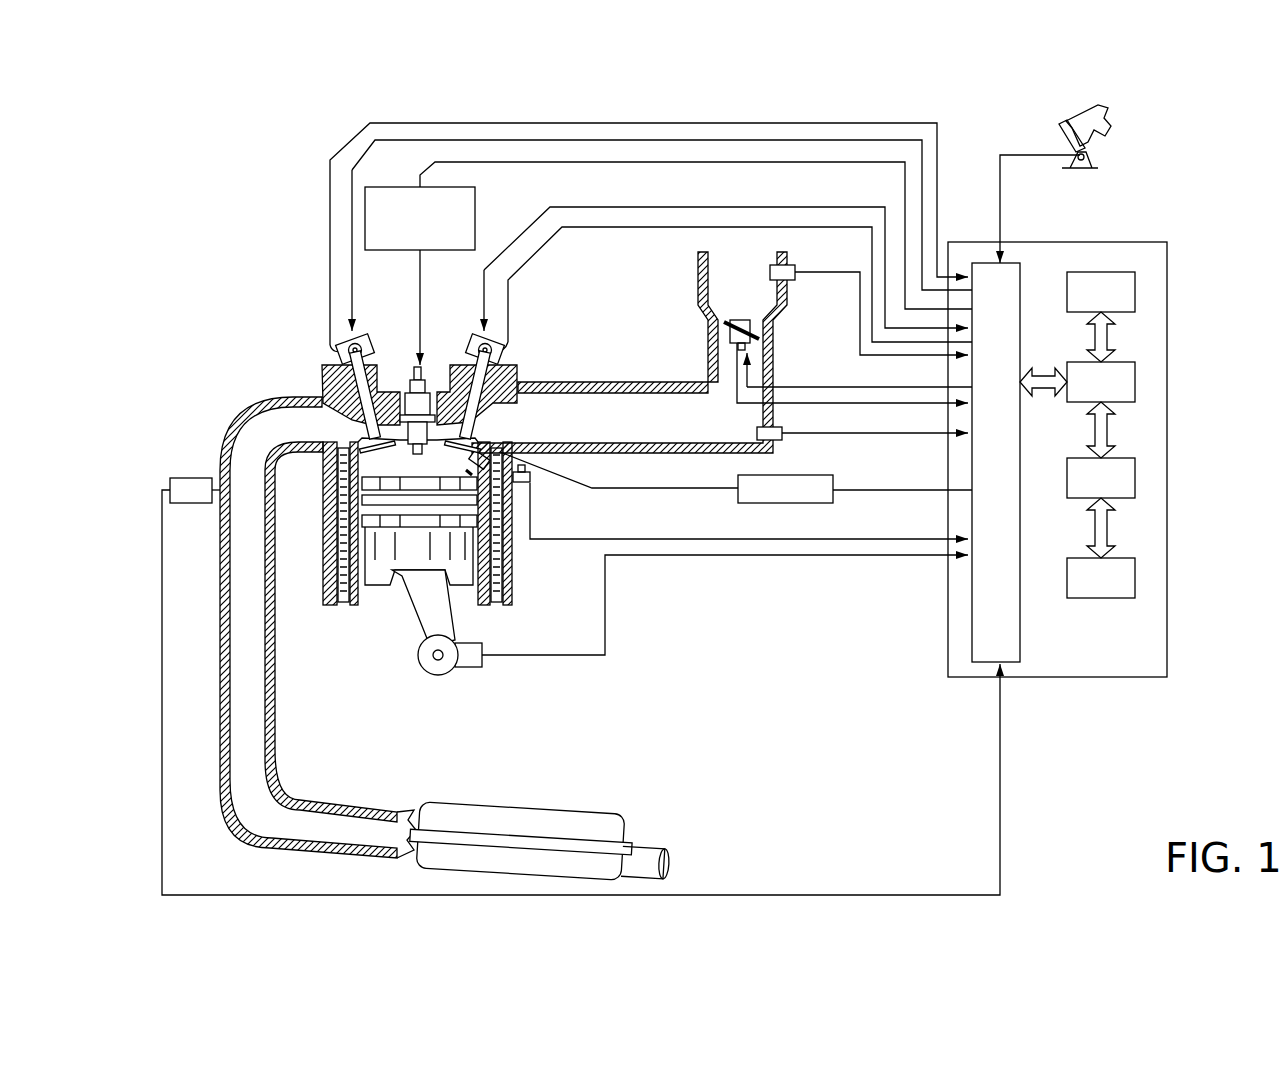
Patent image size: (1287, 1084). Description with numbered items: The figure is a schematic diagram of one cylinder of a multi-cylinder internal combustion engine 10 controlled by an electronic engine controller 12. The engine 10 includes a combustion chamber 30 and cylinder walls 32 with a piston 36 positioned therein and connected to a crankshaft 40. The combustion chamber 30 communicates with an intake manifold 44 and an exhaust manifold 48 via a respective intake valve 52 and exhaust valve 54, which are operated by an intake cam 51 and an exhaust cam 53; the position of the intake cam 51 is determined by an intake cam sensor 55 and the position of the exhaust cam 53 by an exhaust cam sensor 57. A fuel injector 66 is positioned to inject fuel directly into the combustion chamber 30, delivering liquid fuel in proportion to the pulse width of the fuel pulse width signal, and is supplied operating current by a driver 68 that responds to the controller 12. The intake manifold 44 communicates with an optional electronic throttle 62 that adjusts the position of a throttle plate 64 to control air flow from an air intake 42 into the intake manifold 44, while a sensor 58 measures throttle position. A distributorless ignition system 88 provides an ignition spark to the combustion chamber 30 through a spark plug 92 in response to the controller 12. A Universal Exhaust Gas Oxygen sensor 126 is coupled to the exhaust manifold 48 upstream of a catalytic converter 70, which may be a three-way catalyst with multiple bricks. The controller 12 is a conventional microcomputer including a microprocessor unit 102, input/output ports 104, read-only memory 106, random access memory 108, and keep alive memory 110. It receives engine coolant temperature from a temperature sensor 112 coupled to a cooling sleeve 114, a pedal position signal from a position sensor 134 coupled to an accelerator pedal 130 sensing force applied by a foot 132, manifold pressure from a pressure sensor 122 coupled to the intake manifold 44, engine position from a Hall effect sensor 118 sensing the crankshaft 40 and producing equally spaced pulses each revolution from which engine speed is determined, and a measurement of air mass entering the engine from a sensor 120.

The internal combustion engine 10 is at (262, 322).
The electronic engine controller 12 is at (1155, 240).
The combustion chamber 30 is at (415, 458).
The cylinder walls 32 is at (360, 598).
The piston 36 is at (400, 557).
The crankshaft 40 is at (430, 672).
The air intake 42 is at (752, 298).
The intake manifold 44 is at (692, 431).
The exhaust manifold 48 is at (302, 436).
The intake cam 51 is at (480, 335).
The intake valve 52 is at (478, 438).
The exhaust cam 53 is at (362, 336).
The exhaust valve 54 is at (350, 428).
The intake cam sensor 55 is at (500, 352).
The exhaust cam sensor 57 is at (345, 350).
The throttle position sensor 58 is at (725, 345).
The electronic throttle 62 is at (757, 330).
The throttle plate 64 is at (728, 325).
The fuel injector 66 is at (478, 465).
The driver 68 is at (760, 503).
The catalytic converter 70 is at (432, 805).
The distributorless ignition system 88 is at (380, 187).
The spark plug 92 is at (423, 368).
The microprocessor unit 102 is at (1135, 380).
The input/output ports 104 is at (1028, 268).
The read-only memory 106 is at (1135, 290).
The random access memory 108 is at (1135, 477).
The keep alive memory 110 is at (1135, 575).
The temperature sensor 112 is at (530, 487).
The cooling sleeve 114 is at (512, 540).
The Hall effect sensor 118 is at (468, 668).
The air mass sensor 120 is at (790, 265).
The pressure sensor 122 is at (782, 442).
The Universal Exhaust Gas Oxygen sensor 126 is at (170, 483).
The accelerator pedal 130 is at (1062, 130).
The foot 132 is at (1105, 118).
The position sensor 134 is at (1095, 157).